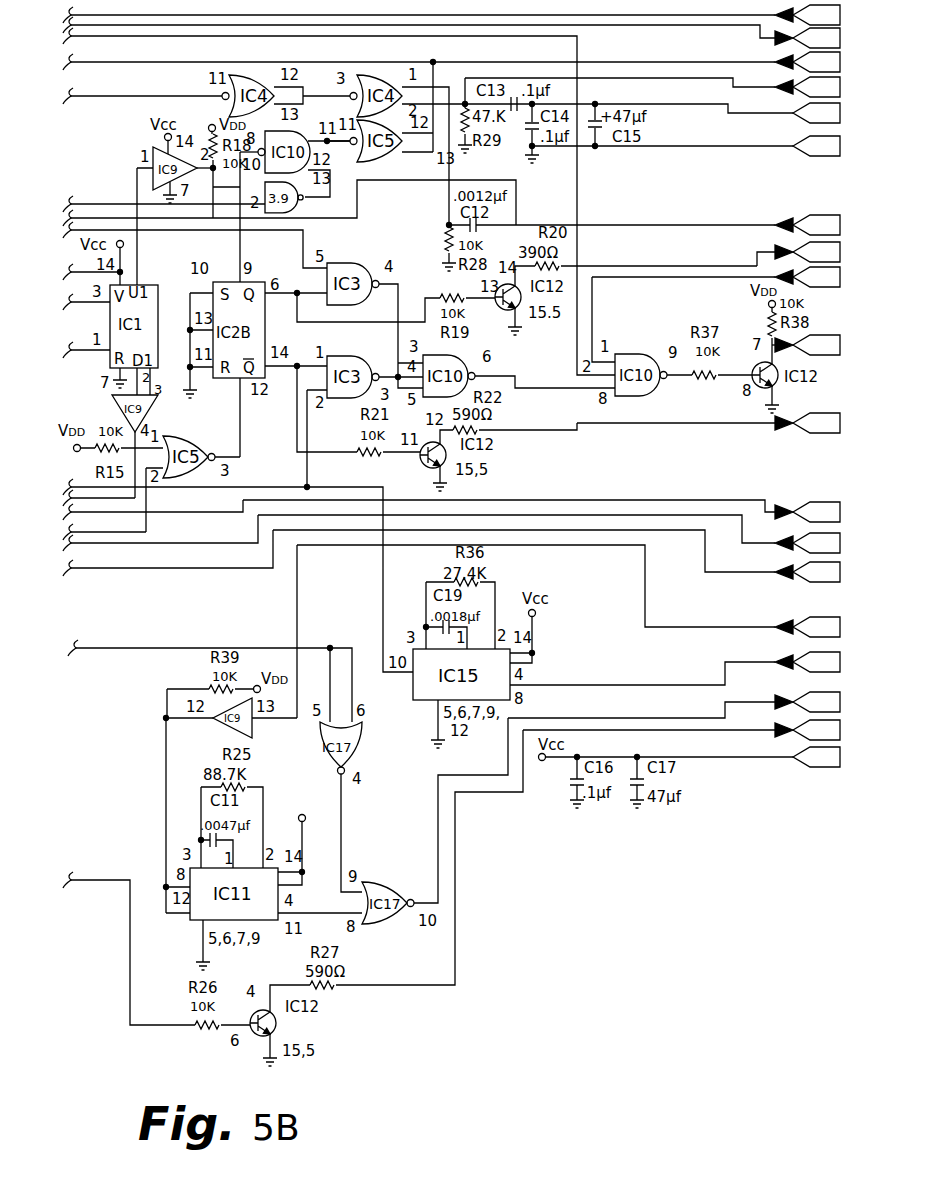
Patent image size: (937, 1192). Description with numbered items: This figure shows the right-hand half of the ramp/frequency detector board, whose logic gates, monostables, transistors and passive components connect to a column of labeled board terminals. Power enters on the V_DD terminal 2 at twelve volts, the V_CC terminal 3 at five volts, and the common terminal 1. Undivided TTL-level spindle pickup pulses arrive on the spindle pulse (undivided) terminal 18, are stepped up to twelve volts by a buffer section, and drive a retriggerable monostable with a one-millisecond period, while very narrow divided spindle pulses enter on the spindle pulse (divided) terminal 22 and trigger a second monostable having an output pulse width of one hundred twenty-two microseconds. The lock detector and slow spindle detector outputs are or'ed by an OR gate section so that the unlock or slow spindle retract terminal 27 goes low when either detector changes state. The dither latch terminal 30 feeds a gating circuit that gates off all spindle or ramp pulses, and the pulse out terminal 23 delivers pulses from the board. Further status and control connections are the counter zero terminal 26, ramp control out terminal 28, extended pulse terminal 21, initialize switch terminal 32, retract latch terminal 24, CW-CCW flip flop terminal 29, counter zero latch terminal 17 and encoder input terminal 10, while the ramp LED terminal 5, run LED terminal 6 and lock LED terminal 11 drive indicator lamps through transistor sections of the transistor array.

The common terminal 1 is at (717, 146).
The V_DD supply terminal 2 is at (717, 113).
The V_CC supply terminal 3 is at (693, 757).
The ramp LED terminal 5 is at (798, 254).
The run LED terminal 6 is at (708, 423).
The encoder input terminal 10 is at (556, 556).
The lock LED terminal 11 is at (681, 730).
The counter zero latch terminal 17 is at (549, 534).
The spindle pulse (undivided) input terminal 18 is at (568, 591).
The extended pulse terminal 21 is at (455, 62).
The spindle pulse (divided) input terminal 22 is at (675, 668).
The pulse out terminal 23 is at (806, 345).
The retract latch terminal 24 is at (678, 225).
The counter zero terminal 26 is at (455, 15).
The unlock or slow spindle retract output terminal 27 is at (674, 705).
The ramp control out terminal 28 is at (455, 36).
The CW-CCW flip flop terminal 29 is at (541, 511).
The dither latch terminal 30 is at (716, 277).
The initialize switch terminal 32 is at (652, 87).